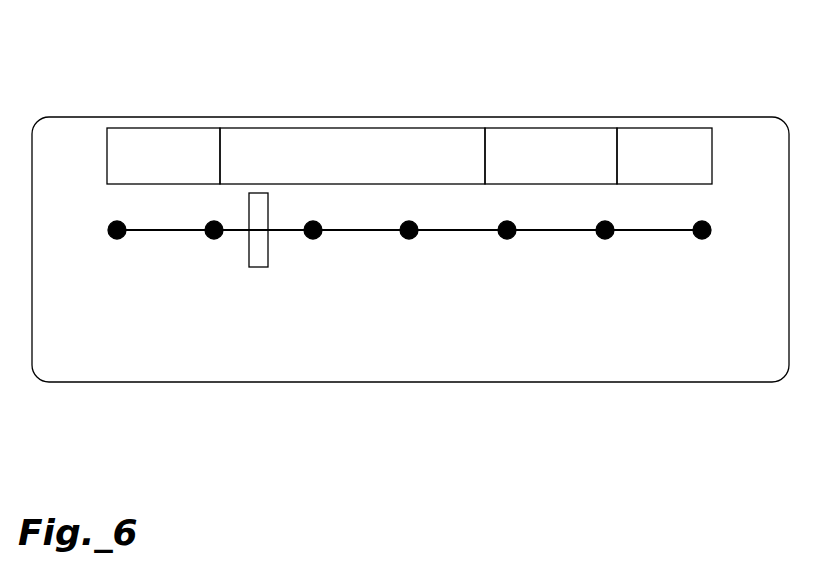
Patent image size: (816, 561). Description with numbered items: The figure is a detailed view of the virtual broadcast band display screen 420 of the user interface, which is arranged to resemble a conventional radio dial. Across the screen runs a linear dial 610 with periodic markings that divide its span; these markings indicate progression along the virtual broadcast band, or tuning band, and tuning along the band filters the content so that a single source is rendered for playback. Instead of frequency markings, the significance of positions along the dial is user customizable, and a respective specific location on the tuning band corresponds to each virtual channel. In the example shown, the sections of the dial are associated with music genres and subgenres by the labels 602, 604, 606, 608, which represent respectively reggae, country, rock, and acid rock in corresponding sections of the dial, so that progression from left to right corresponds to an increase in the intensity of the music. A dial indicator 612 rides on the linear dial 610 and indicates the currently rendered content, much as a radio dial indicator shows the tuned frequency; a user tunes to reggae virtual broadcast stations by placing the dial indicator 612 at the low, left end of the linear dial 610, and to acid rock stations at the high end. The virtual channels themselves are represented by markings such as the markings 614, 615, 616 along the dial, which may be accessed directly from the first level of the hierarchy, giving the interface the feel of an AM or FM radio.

The virtual broadcast band display screen 420 is at (385, 67).
The reggae label 602 is at (145, 137).
The country label 604 is at (295, 137).
The rock label 606 is at (519, 137).
The acid rock label 608 is at (642, 137).
The linear dial 610 is at (453, 229).
The dial indicator 612 is at (266, 267).
The marking 614 is at (214, 232).
The marking 615 is at (313, 233).
The marking 616 is at (411, 233).